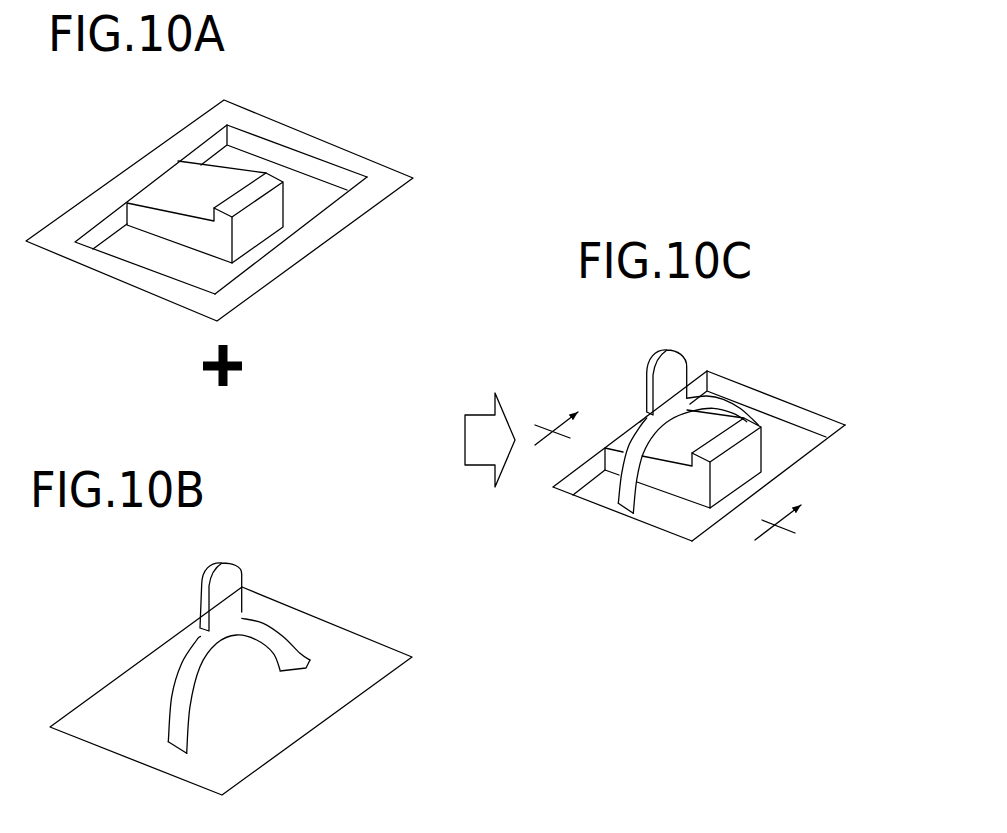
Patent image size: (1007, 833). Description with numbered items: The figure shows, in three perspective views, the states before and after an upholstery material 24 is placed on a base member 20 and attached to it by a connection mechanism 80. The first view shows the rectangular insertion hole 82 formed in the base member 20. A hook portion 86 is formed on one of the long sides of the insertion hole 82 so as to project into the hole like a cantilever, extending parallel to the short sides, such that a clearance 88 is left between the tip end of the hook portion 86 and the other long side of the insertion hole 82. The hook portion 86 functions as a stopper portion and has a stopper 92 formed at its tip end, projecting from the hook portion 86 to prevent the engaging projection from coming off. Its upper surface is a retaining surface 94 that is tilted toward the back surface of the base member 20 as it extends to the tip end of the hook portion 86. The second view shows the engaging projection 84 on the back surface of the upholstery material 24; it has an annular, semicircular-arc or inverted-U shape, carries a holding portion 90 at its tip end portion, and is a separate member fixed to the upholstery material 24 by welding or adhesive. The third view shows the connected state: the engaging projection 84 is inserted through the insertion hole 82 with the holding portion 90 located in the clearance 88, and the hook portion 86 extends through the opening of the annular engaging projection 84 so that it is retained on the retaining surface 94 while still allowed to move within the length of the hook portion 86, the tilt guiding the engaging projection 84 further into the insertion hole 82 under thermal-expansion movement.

In FIG. 10A, the base member 20 is at (383, 178).
In FIG. 10B, the upholstery material 24 is at (354, 678).
In FIG. 10C, the connection mechanism 80 is at (792, 350).
In FIG. 10A, the insertion hole 82 is at (308, 167).
In FIG. 10C, the insertion hole 82 is at (792, 415).
In FIG. 10B, the engaging projection 84 is at (183, 683).
In FIG. 10C, the engaging projection 84 is at (622, 482).
In FIG. 10A, the hook portion 86 is at (216, 155).
In FIG. 10C, the hook portion 86 is at (670, 488).
In FIG. 10A, the clearance 88 is at (273, 244).
In FIG. 10C, the clearance 88 is at (766, 481).
In FIG. 10B, the holding portion 90 is at (226, 584).
In FIG. 10C, the holding portion 90 is at (672, 372).
In FIG. 10A, the stopper 92 is at (257, 186).
In FIG. 10C, the stopper 92 is at (734, 436).
In FIG. 10A, the retaining surface 94 is at (188, 190).